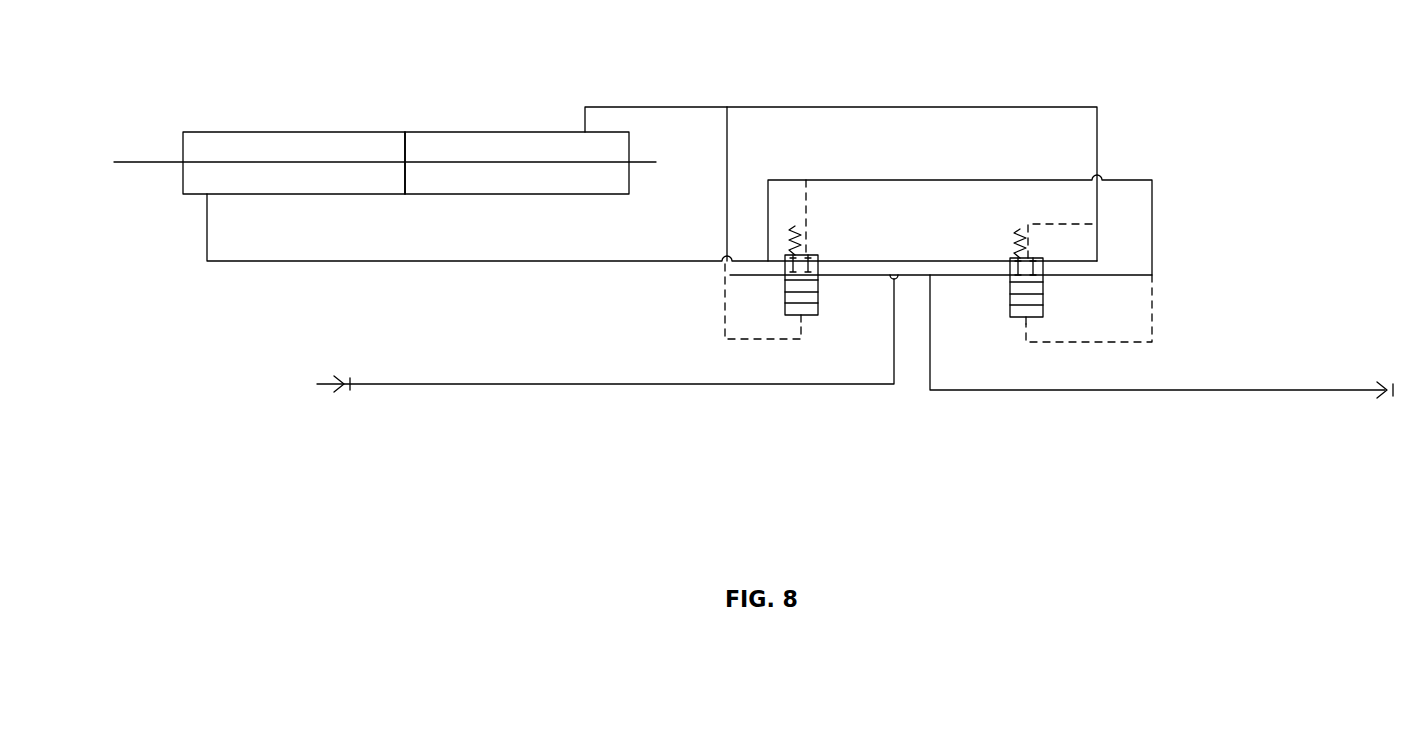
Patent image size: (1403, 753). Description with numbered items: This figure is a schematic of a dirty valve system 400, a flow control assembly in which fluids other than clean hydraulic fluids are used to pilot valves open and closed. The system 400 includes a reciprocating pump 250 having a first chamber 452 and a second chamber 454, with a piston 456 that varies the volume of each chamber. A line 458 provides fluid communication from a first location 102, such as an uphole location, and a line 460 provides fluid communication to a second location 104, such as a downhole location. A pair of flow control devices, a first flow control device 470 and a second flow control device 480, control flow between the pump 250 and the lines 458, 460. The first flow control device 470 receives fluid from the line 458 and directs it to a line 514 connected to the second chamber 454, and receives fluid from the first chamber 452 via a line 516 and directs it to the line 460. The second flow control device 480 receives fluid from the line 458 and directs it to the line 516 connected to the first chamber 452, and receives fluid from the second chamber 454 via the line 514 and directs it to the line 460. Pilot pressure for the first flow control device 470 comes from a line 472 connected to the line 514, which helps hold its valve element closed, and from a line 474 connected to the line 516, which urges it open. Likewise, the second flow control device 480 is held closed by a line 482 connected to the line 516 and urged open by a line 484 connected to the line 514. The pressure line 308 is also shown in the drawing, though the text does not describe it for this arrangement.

The system 400 is at (888, 40).
The reciprocating pump 250 is at (520, 95).
The second chamber 454 is at (254, 130).
The first chamber 452 is at (462, 130).
The piston 456 is at (405, 182).
The line 514 is at (244, 262).
The line 516 is at (662, 105).
The pressure line 308 is at (916, 178).
The first flow control device 470 is at (818, 298).
The line 472 is at (806, 230).
The line 474 is at (725, 306).
The second flow control device 480 is at (1008, 298).
The line 482 is at (1031, 222).
The line 484 is at (1153, 308).
The line 458 is at (523, 388).
The first location 102 is at (331, 349).
The line 460 is at (1023, 392).
The second location 104 is at (1377, 421).